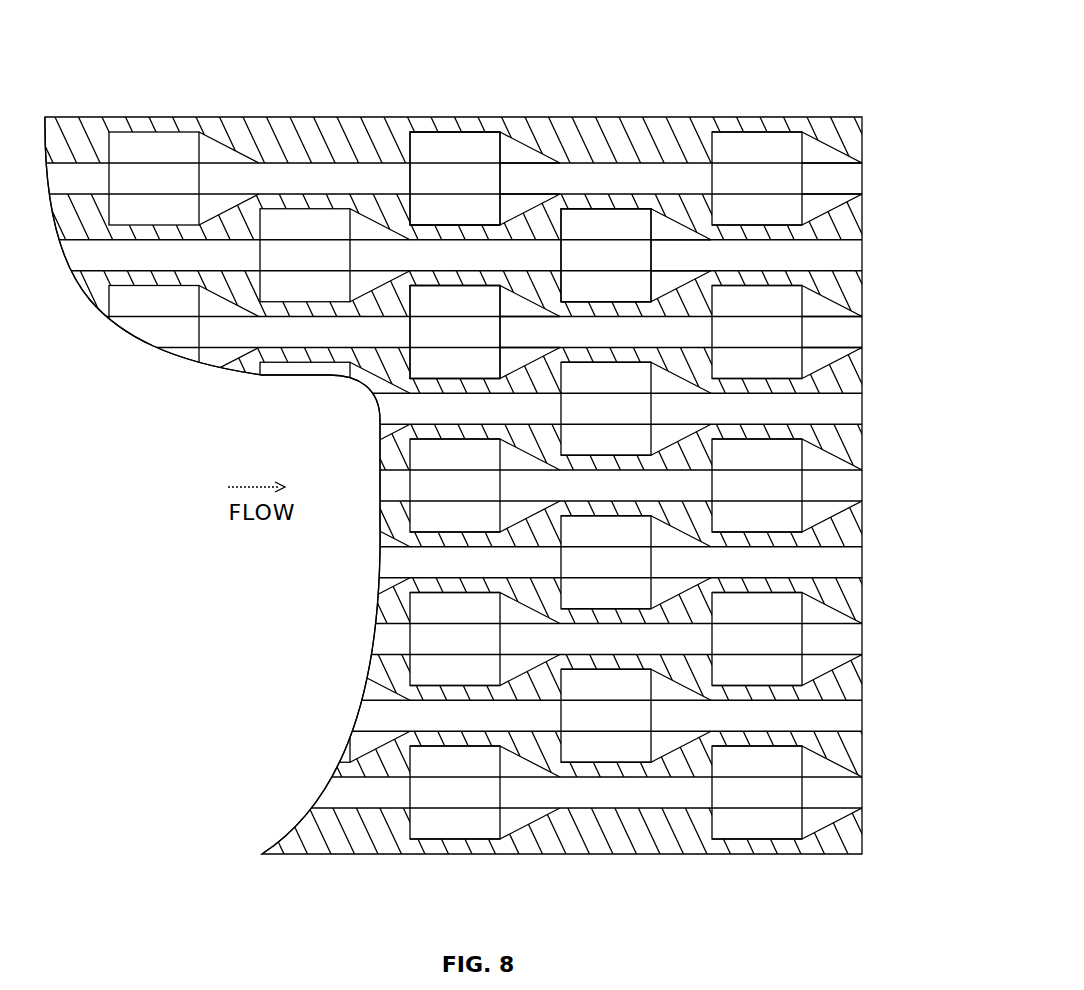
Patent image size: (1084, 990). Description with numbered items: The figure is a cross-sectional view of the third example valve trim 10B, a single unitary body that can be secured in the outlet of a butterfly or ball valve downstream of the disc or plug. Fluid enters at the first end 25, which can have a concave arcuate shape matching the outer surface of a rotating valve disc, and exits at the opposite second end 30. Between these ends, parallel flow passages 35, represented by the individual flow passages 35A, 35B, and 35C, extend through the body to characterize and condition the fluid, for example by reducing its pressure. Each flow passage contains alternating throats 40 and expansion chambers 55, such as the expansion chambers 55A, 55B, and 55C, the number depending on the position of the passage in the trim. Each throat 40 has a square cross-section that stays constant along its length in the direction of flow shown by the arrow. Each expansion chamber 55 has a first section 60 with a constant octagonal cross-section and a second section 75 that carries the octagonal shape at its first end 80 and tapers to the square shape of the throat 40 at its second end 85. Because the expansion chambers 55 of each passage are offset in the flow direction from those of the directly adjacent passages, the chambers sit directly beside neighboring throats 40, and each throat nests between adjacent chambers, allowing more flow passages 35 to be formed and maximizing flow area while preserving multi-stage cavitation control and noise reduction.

The valve trim 10B is at (368, 70).
The first end 25 is at (375, 521).
The second end 30 is at (872, 441).
The flow passages 35 is at (840, 406).
The flow passage 35A is at (840, 179).
The flow passage 35B is at (840, 256).
The flow passage 35C is at (840, 332).
The throat 40 is at (66, 193).
The expansion chamber 55 is at (139, 192).
The expansion chamber 55A is at (415, 192).
The expansion chamber 55B is at (565, 268).
The expansion chamber 55C is at (415, 344).
The first section 60 is at (479, 134).
The second section 75 is at (533, 271).
The first end 80 is at (499, 202).
The second end 85 is at (553, 176).